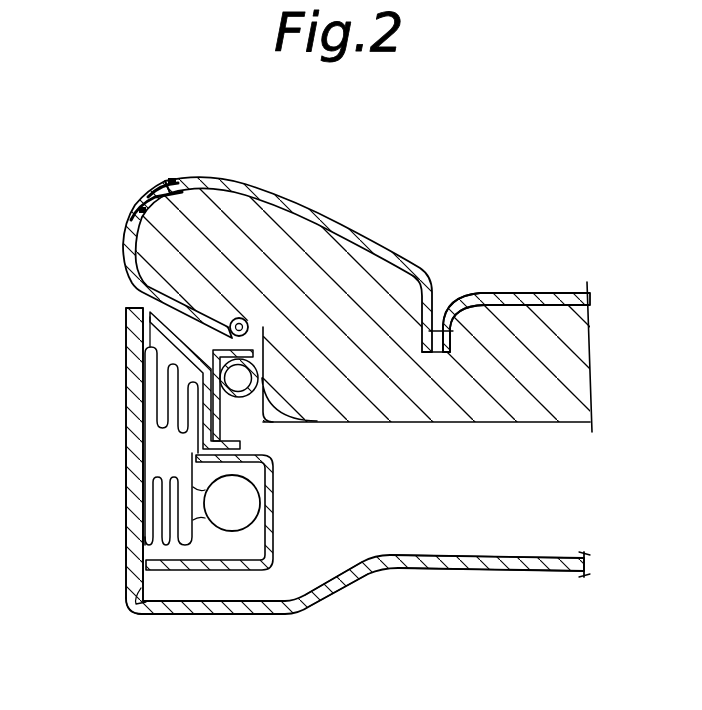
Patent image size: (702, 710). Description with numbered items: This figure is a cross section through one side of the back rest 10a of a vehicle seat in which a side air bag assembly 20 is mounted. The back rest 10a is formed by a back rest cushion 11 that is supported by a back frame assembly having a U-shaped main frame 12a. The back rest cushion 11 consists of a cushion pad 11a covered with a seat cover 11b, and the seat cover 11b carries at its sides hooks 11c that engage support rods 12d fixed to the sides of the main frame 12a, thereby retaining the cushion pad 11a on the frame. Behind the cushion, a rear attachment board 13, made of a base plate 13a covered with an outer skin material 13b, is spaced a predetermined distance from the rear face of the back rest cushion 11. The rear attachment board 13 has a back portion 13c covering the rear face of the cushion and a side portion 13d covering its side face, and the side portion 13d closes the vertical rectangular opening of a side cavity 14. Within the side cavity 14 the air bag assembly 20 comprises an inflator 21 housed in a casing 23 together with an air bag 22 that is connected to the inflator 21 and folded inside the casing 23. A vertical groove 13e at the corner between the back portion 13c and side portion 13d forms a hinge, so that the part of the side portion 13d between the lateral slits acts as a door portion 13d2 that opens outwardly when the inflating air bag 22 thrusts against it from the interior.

The back rest 10a is at (402, 206).
The back rest cushion 11 is at (549, 283).
The cushion pad 11a is at (432, 410).
The seat cover 11b is at (436, 278).
The hooks 11c is at (248, 320).
The main frame 12a is at (312, 418).
The support rods 12d is at (235, 320).
The rear attachment board 13 is at (463, 577).
The base plate 13a is at (483, 563).
The outer skin material 13b is at (557, 568).
The back portion 13c is at (347, 587).
The side portion 13d is at (120, 354).
The door portion 13d2 is at (130, 503).
The vertical groove 13e is at (147, 617).
The side cavity 14 is at (198, 590).
The side air bag assembly 20 is at (258, 583).
The inflator 21 is at (243, 507).
The air bag 22 is at (160, 455).
The casing 23 is at (268, 463).